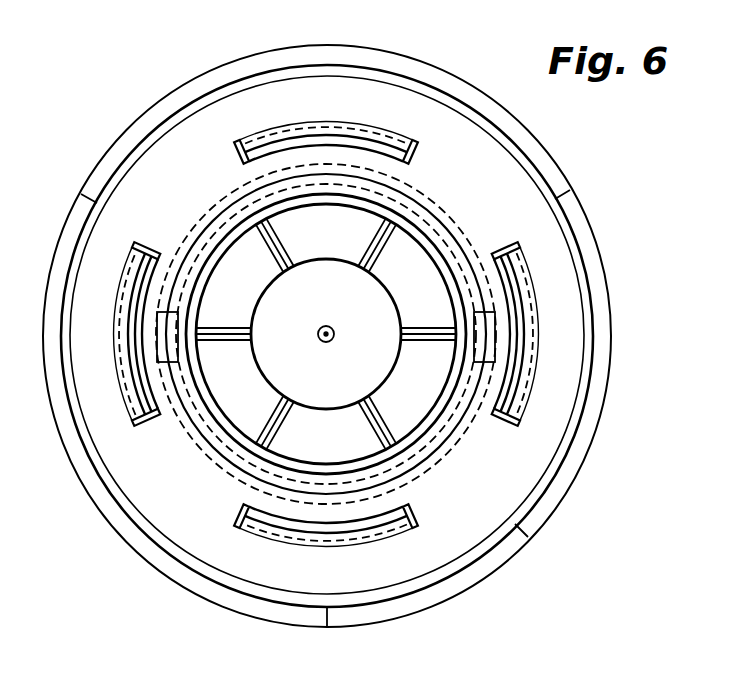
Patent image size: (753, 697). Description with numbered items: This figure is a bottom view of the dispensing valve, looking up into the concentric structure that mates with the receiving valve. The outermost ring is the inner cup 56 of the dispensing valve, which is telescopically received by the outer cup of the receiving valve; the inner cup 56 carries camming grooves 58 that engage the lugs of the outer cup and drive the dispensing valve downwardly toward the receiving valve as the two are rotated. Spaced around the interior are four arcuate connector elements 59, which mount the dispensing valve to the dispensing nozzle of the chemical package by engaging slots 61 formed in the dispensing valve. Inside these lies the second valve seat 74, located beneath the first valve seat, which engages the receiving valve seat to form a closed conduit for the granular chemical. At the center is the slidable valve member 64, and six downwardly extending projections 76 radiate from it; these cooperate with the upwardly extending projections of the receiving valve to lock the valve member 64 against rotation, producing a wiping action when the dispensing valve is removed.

The inner cup 56 is at (136, 126).
The camming grooves 58 is at (287, 62).
The connector elements 59 is at (344, 126).
The slots 61 is at (395, 190).
The slidable valve member 64 is at (386, 341).
The second valve seat 74 is at (210, 434).
The downwardly extending projections 76 is at (295, 232).